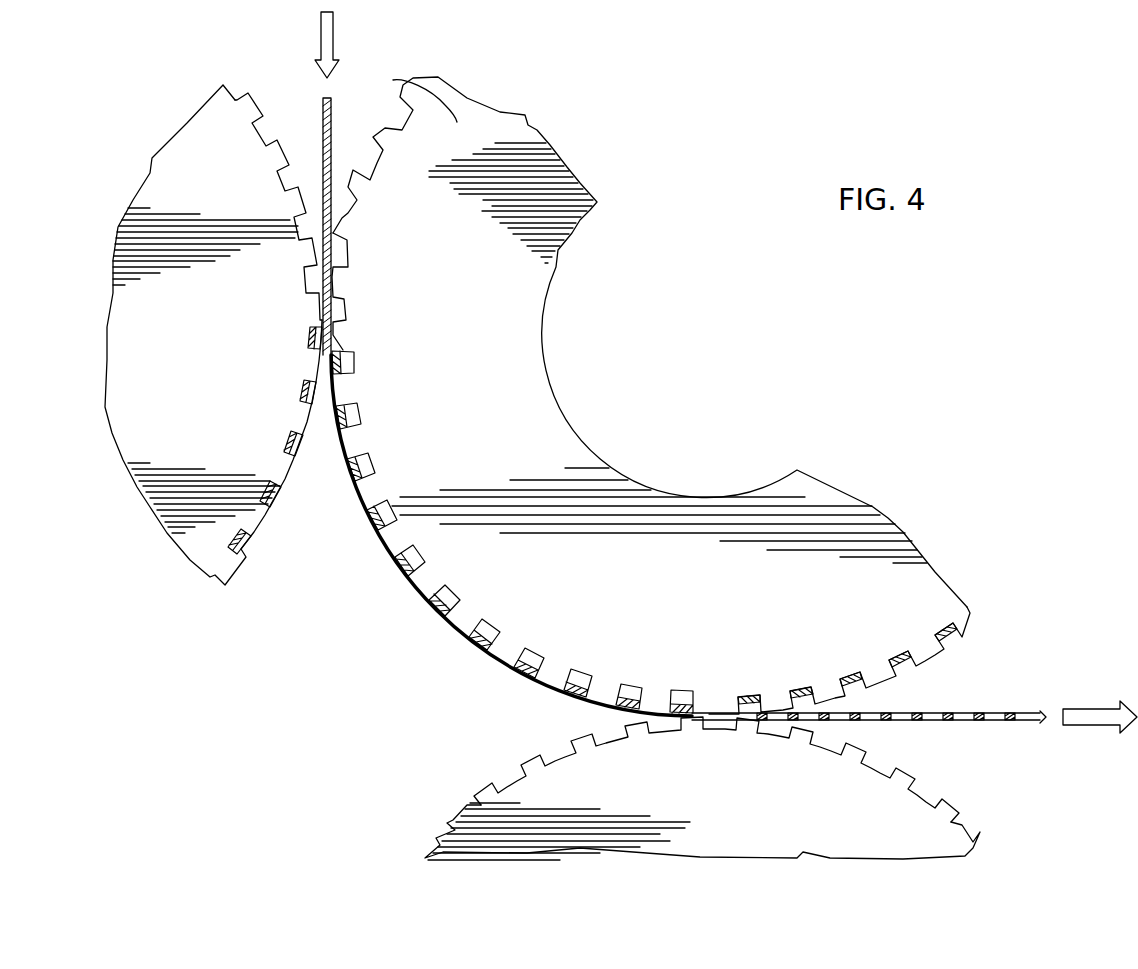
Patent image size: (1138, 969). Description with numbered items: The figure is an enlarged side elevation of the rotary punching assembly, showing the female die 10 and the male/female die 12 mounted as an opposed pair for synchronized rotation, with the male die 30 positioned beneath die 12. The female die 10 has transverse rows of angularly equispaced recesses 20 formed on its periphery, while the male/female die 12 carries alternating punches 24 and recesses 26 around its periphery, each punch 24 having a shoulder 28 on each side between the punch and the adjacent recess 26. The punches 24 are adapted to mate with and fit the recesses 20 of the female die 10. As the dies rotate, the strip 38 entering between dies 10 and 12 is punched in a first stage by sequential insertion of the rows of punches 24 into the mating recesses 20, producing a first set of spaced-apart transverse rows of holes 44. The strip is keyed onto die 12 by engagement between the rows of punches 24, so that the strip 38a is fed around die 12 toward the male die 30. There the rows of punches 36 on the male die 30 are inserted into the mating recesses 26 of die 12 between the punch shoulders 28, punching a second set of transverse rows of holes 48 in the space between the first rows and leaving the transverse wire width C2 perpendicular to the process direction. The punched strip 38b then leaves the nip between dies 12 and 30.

The female die 10 is at (213, 324).
The male/female die 12 is at (599, 376).
The recesses 20 is at (289, 182).
The punches 24 is at (373, 134).
The recesses 26 is at (353, 208).
The shoulder 28 is at (392, 137).
The male die 30 is at (702, 788).
The punches 36 is at (482, 791).
The strip 38 is at (726, 400).
The strip 38a is at (425, 596).
The punched strip 38b is at (1027, 723).
The rows of holes 44 is at (897, 713).
The rows of holes 48 is at (937, 712).
The transverse wire width C2 is at (708, 708).